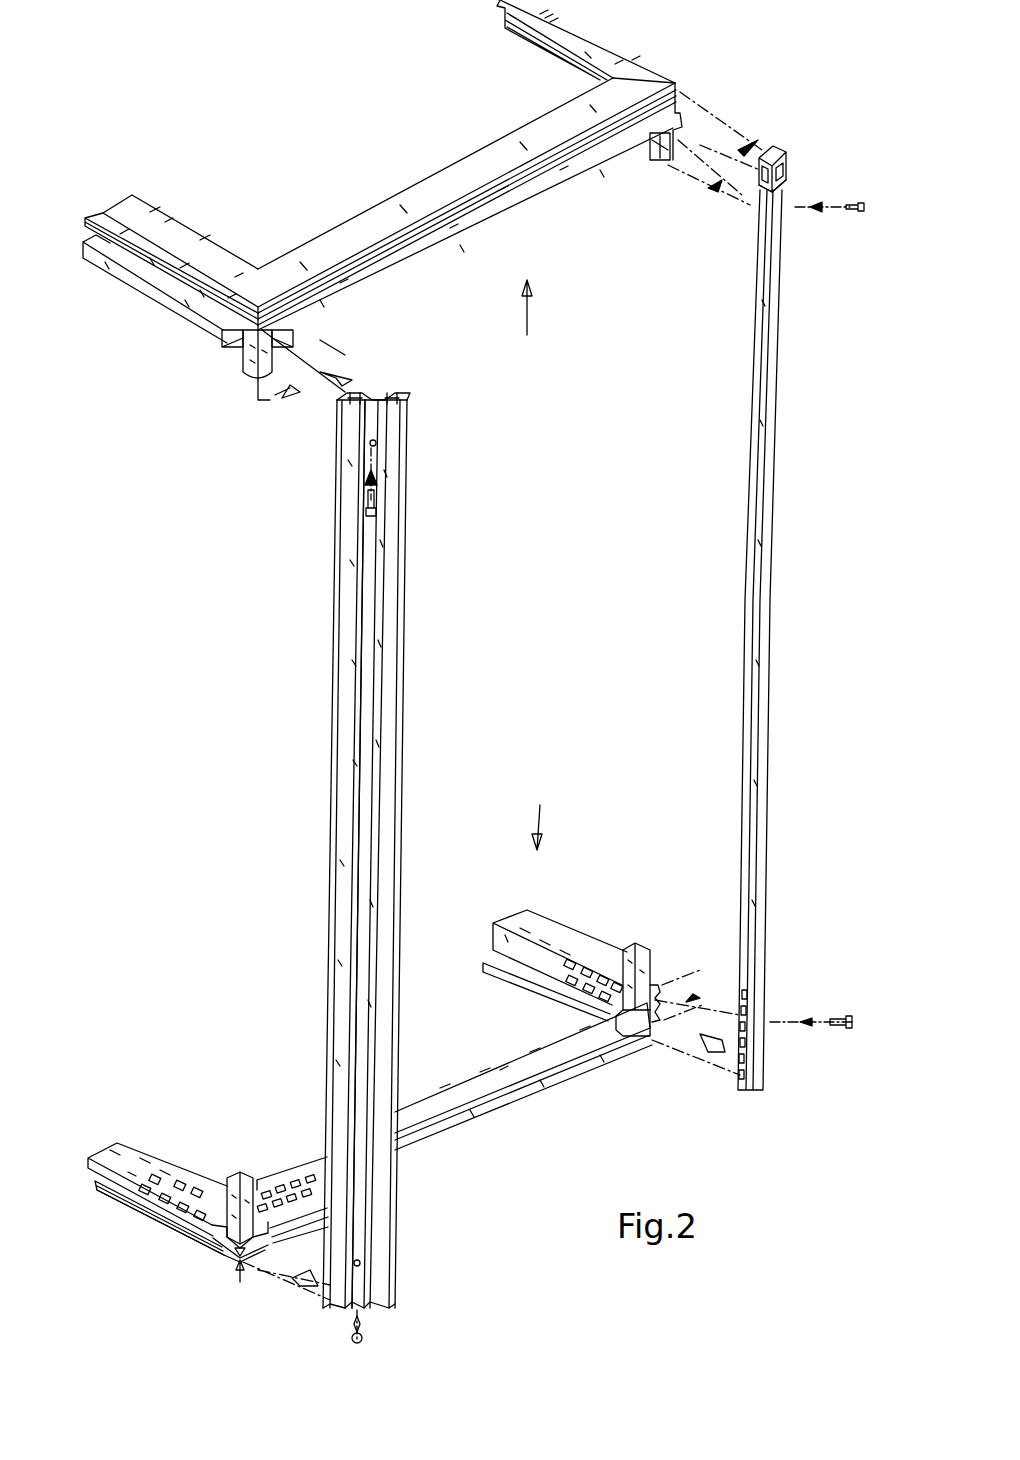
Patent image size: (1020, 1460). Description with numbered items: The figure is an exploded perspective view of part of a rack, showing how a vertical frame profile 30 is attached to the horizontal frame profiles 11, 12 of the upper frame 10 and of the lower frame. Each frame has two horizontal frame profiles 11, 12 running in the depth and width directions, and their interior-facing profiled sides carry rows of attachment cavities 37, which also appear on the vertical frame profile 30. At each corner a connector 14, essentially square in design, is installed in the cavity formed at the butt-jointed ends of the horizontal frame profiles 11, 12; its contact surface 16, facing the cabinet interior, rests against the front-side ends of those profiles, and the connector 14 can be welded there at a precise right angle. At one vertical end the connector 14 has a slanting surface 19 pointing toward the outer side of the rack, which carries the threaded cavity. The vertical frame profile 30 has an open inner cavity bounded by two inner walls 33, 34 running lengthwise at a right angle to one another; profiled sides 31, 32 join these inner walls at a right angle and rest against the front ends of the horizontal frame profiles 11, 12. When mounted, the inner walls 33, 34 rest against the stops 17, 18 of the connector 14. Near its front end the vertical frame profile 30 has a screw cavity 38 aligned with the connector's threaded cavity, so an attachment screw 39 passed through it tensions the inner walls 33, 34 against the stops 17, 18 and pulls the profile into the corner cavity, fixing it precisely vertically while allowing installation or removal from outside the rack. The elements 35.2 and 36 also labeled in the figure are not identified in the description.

The upper frame 10 is at (536, 565).
The horizontal frame profile 11 is at (182, 248).
The horizontal frame profile 12 is at (396, 216).
The connector 14 is at (246, 368).
The contact surface 16 is at (634, 1012).
The stop 17 is at (262, 1182).
The stop 18 is at (214, 1225).
The slanting surface 19 is at (232, 1178).
The vertical frame profile 30 is at (405, 678).
The profiled side 31 is at (334, 410).
The profiled side 32 is at (409, 397).
The inner wall 33 is at (364, 388).
The inner wall 34 is at (396, 388).
The post groove 35.2 is at (376, 793).
The post head 36 is at (778, 146).
The attachment cavities 37 is at (736, 1075).
The screw cavity 38 is at (370, 446).
The attachment screw 39 is at (850, 212).